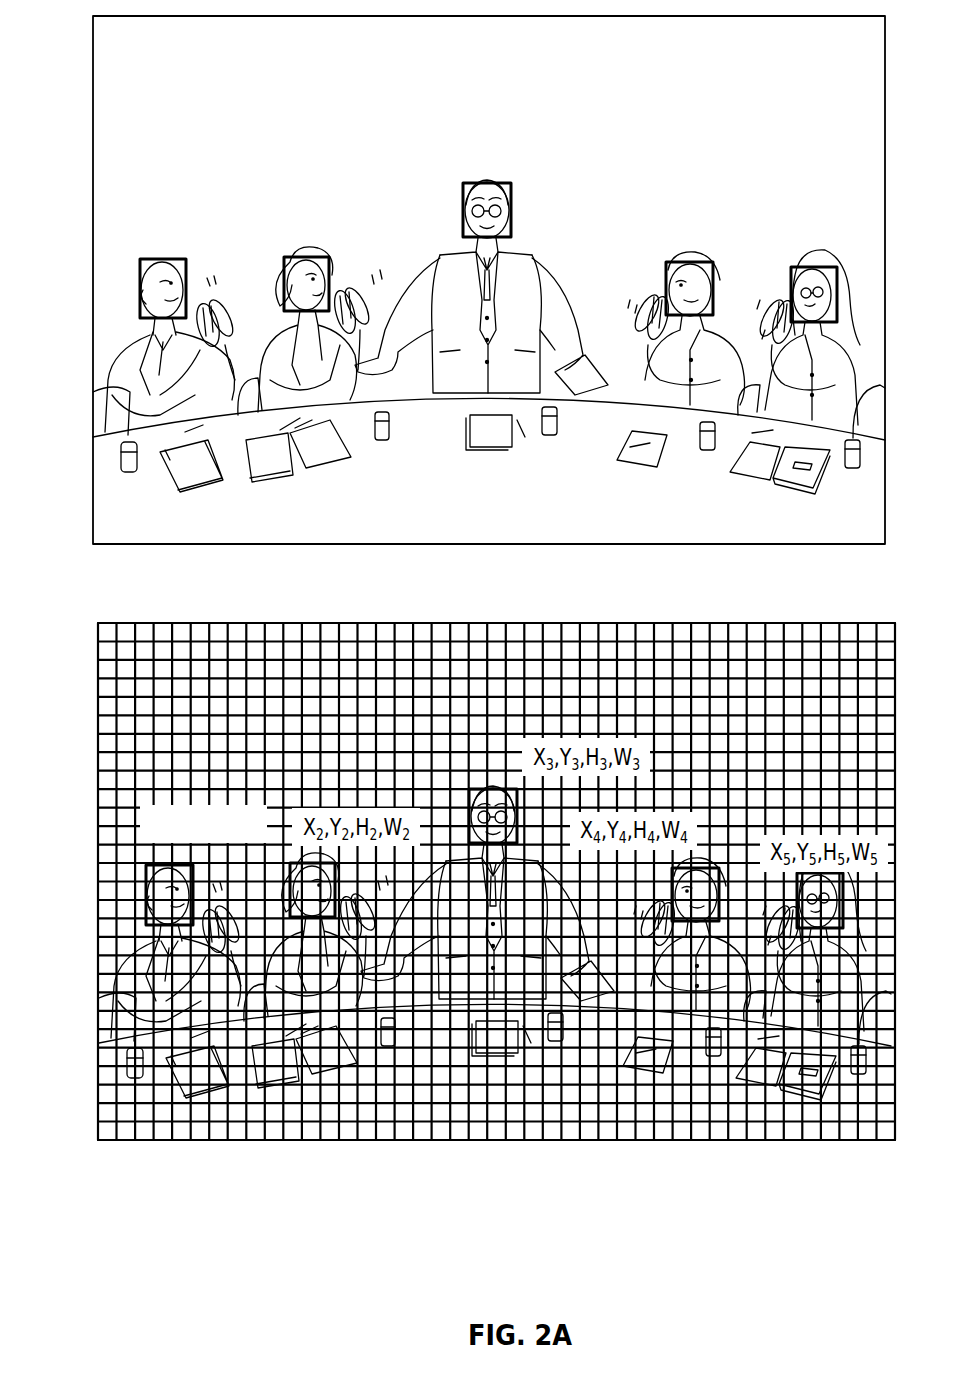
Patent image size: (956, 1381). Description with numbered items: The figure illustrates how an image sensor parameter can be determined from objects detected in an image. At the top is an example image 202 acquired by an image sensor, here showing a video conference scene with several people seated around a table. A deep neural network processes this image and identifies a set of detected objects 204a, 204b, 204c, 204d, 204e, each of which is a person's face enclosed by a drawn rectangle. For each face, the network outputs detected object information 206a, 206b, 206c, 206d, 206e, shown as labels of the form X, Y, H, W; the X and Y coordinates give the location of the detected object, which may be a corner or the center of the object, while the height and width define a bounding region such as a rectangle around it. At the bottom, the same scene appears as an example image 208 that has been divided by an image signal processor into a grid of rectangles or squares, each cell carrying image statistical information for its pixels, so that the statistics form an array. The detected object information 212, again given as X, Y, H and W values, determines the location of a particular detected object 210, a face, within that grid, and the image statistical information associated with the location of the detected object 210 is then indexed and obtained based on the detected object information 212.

The example image 202 is at (93, 108).
The detected object 204a is at (140, 268).
The detected object 204b is at (284, 265).
The detected object 204c is at (463, 186).
The detected object 204d is at (666, 288).
The detected object 204e is at (791, 287).
The detected object information 206a is at (192, 176).
The detected object information 206b is at (345, 190).
The detected object information 206c is at (584, 125).
The detected object information 206d is at (689, 208).
The detected object information 206e is at (821, 196).
The example image 208 is at (97, 680).
The detected object 210 is at (146, 870).
The detected object information 212 is at (150, 794).